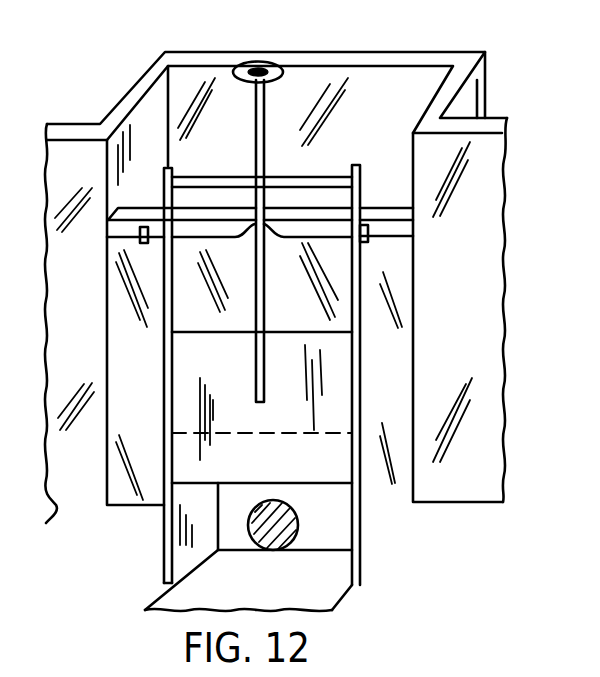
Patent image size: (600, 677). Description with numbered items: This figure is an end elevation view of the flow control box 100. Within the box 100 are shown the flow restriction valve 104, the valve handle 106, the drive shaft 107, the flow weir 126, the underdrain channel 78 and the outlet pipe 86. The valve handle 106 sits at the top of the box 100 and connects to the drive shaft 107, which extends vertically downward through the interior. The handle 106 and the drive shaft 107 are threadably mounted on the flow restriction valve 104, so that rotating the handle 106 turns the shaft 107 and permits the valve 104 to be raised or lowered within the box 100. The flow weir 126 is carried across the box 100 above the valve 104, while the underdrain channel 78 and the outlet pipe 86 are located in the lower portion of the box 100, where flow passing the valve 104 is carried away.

The flow control box 100 is at (357, 57).
The valve handle 106 is at (259, 61).
The drive shaft 107 is at (252, 107).
The flow weir 126 is at (387, 223).
The flow restriction valve 104 is at (229, 393).
The underdrain channel 78 is at (197, 588).
The outlet pipe 86 is at (267, 550).